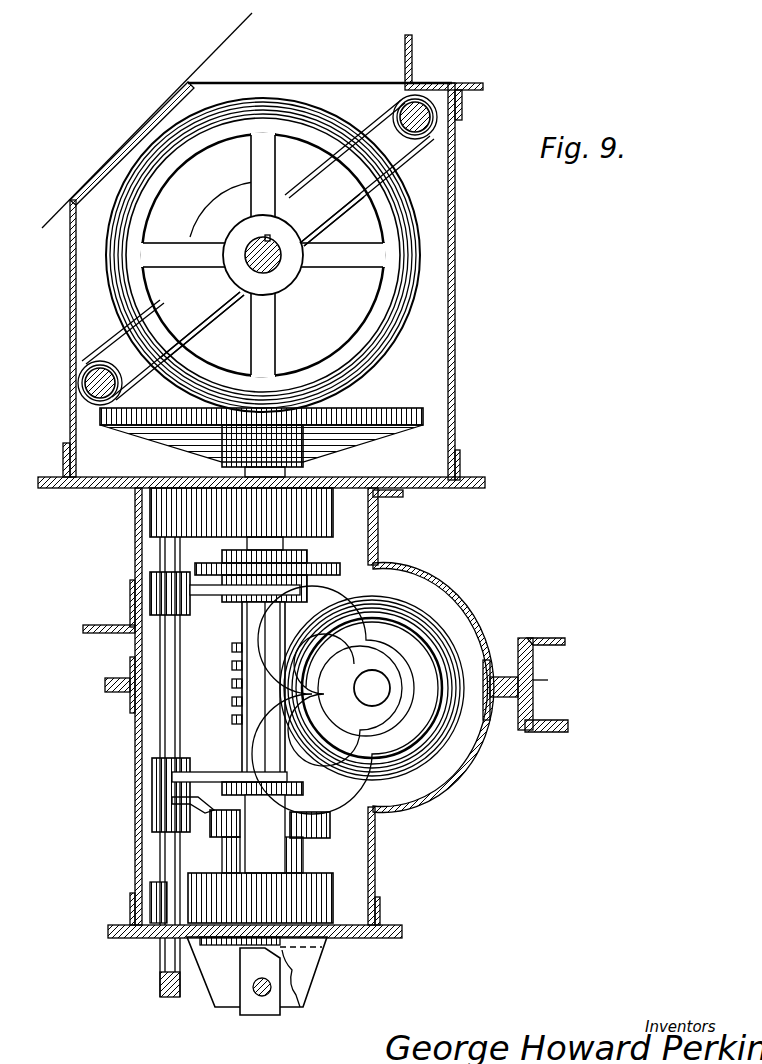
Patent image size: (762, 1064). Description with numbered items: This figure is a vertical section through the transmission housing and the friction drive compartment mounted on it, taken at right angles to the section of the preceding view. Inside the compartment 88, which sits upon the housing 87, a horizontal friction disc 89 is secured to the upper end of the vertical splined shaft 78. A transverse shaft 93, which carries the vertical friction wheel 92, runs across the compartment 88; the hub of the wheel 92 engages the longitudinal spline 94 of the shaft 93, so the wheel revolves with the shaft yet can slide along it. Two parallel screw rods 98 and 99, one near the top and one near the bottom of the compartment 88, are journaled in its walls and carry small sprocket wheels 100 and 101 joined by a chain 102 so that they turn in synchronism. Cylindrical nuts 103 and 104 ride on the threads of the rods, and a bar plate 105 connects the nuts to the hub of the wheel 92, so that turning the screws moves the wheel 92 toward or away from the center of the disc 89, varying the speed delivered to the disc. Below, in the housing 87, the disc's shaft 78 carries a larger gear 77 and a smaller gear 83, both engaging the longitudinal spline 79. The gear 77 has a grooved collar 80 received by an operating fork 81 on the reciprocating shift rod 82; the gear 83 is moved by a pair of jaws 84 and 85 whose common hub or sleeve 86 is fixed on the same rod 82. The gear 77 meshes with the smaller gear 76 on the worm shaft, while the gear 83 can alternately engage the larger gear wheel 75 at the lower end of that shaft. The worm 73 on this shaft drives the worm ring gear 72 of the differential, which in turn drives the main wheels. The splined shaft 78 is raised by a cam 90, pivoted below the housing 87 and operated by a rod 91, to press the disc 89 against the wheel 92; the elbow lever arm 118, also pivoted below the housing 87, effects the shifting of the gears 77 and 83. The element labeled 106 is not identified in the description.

The worm ring gear 72 is at (425, 637).
The worm 73 is at (236, 686).
The larger gear wheel 75 is at (330, 823).
The smaller gear 76 is at (305, 556).
The larger gear 77 is at (335, 575).
The vertical splined shaft 78 is at (262, 739).
The longitudinal spline 79 is at (288, 758).
The grooved collar 80 is at (300, 591).
The operating fork 81 is at (160, 594).
The shift rod 82 is at (166, 637).
The smaller gear 83 is at (300, 790).
The upper jaw 84 is at (190, 790).
The lower jaw 85 is at (200, 797).
The hub or sleeve 86 is at (172, 815).
The housing 87 is at (430, 785).
The compartment 88 is at (455, 326).
The horizontal friction disc 89 is at (425, 415).
The cam 90 is at (255, 965).
The rod 91 is at (262, 997).
The vertical friction wheel 92 is at (305, 255).
The shaft 93 is at (270, 262).
The longitudinal spline 94 is at (268, 236).
The upper screw rod 98 is at (424, 126).
The lower screw rod 99 is at (92, 386).
The small sprocket wheel 100 is at (400, 96).
The small sprocket wheel 101 is at (80, 372).
The chain 102 is at (328, 226).
The cylindrical nut 103 is at (397, 150).
The cylindrical nut 104 is at (127, 364).
The bar plate 105 is at (205, 318).
The hub ring 106 is at (196, 212).
The elbow lever arm 118 is at (158, 987).